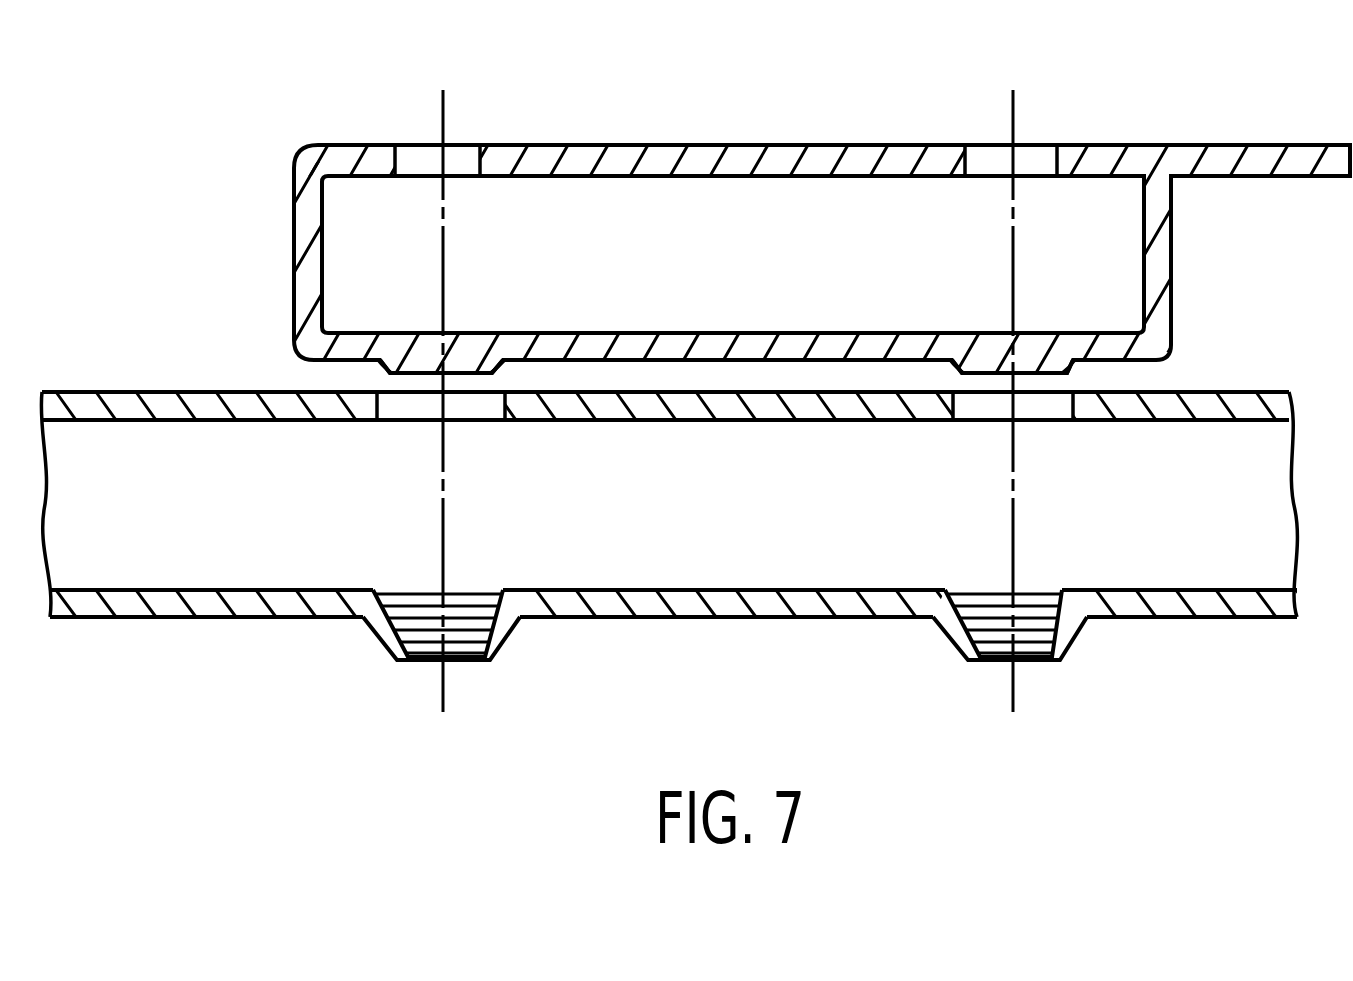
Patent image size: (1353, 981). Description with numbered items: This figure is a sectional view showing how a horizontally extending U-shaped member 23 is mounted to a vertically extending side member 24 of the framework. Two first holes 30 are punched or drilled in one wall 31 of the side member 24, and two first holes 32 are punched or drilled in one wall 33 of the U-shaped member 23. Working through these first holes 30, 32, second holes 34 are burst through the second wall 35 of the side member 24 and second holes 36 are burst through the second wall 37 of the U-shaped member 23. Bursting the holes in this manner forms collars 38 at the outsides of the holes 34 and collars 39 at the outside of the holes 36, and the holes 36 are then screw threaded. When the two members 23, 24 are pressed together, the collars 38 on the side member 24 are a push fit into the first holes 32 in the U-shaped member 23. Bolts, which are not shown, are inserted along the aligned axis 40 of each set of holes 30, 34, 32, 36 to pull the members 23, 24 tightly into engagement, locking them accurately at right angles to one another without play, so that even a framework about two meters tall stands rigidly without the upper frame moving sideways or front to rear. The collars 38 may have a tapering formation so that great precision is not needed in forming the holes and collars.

The U-shaped member 23 is at (708, 625).
The side member 24 is at (689, 140).
The first holes 30 is at (477, 155).
The wall 31 is at (585, 155).
The first holes 32 is at (482, 403).
The wall 33 is at (710, 420).
The second holes 34 is at (467, 357).
The second wall 35 is at (698, 337).
The second holes 36 is at (417, 607).
The second wall 37 is at (620, 588).
The collars 38 is at (380, 367).
The collars 39 is at (383, 635).
The aligned axis 40 is at (440, 128).